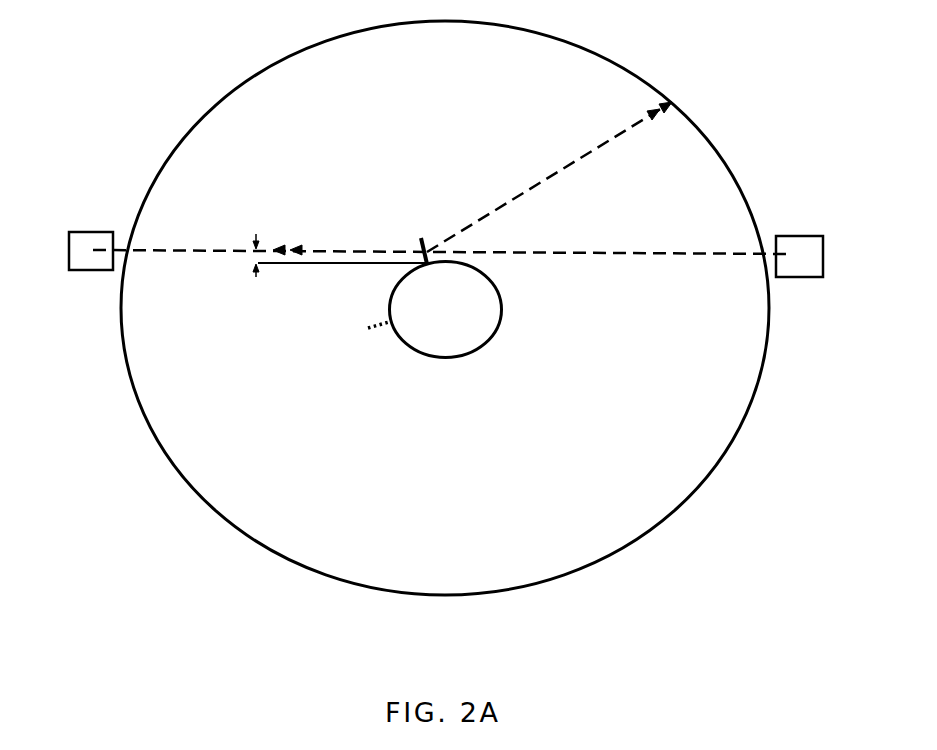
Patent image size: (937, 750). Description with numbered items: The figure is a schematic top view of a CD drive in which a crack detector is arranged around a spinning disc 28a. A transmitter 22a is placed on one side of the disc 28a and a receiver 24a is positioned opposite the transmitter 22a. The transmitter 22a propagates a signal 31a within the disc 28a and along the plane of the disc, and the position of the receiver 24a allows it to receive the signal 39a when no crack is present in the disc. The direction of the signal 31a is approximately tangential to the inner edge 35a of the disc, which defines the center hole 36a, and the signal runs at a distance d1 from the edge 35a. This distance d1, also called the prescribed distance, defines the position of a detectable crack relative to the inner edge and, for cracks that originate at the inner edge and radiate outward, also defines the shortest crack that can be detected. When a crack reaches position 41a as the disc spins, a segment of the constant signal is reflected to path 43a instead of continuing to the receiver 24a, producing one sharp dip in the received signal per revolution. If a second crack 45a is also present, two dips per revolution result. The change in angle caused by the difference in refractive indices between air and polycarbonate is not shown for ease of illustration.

The transmitter 22a is at (797, 236).
The receiver 24a is at (93, 237).
The disc 28a is at (634, 106).
The signal 31a is at (620, 252).
The inner edge 35a is at (500, 330).
The center hole 36a is at (447, 307).
The signal 39a is at (193, 248).
The crack 41a is at (424, 242).
The path 43a is at (590, 155).
The crack 45a is at (381, 333).
The distance d1 is at (248, 258).